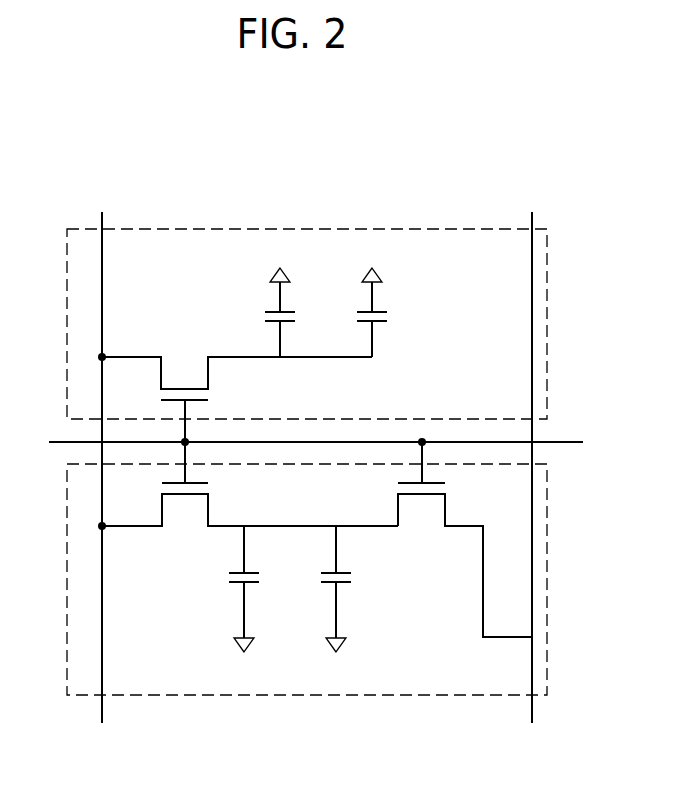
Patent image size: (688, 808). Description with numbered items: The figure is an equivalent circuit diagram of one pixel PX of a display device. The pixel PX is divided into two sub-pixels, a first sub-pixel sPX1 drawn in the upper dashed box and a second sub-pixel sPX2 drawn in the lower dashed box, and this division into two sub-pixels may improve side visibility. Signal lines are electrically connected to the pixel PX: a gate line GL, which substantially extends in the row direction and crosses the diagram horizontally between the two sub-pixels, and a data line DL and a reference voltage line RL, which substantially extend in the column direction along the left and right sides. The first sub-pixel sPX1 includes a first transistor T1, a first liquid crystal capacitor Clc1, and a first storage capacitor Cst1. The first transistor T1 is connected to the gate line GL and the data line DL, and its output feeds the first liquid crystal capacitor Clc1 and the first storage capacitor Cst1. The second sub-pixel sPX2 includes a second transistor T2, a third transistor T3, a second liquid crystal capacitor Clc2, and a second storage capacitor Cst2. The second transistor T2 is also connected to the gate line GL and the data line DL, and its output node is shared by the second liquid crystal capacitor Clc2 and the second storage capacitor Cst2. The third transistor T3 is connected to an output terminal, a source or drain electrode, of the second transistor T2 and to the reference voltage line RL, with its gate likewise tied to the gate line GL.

The pixel PX is at (358, 180).
The first sub-pixel sPX1 is at (547, 323).
The second sub-pixel sPX2 is at (547, 567).
The data line DL is at (102, 451).
The reference voltage line RL is at (531, 451).
The gate line GL is at (298, 445).
The first transistor T1 is at (235, 395).
The second transistor T2 is at (248, 492).
The third transistor T3 is at (465, 537).
The first liquid crystal capacitor Clc1 is at (301, 312).
The first storage capacitor Cst1 is at (394, 312).
The second liquid crystal capacitor Clc2 is at (266, 589).
The second storage capacitor Cst2 is at (358, 589).